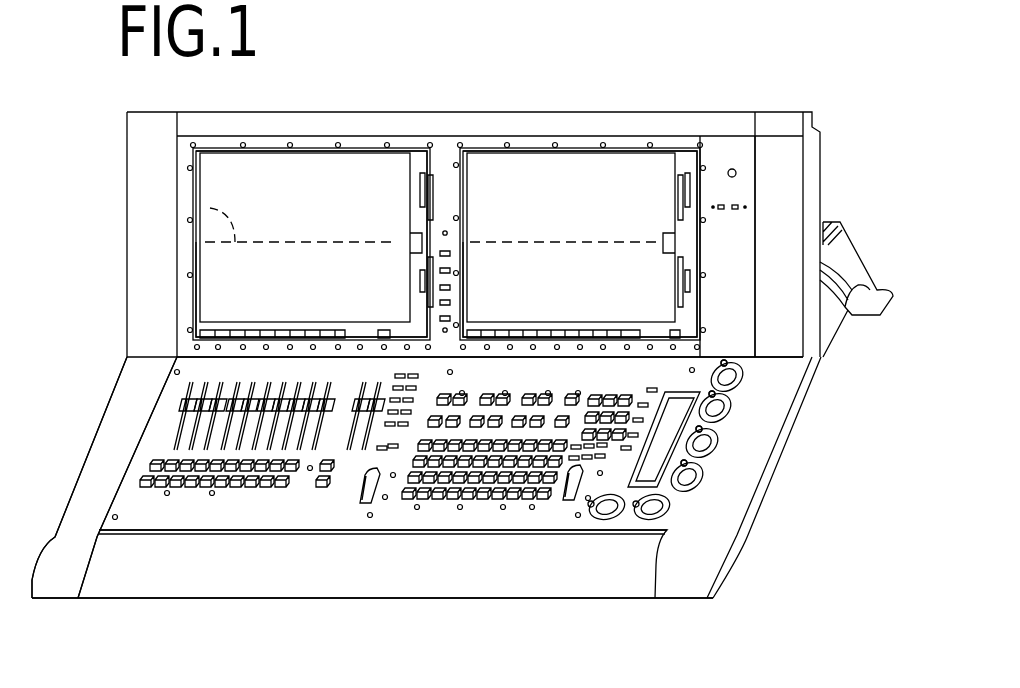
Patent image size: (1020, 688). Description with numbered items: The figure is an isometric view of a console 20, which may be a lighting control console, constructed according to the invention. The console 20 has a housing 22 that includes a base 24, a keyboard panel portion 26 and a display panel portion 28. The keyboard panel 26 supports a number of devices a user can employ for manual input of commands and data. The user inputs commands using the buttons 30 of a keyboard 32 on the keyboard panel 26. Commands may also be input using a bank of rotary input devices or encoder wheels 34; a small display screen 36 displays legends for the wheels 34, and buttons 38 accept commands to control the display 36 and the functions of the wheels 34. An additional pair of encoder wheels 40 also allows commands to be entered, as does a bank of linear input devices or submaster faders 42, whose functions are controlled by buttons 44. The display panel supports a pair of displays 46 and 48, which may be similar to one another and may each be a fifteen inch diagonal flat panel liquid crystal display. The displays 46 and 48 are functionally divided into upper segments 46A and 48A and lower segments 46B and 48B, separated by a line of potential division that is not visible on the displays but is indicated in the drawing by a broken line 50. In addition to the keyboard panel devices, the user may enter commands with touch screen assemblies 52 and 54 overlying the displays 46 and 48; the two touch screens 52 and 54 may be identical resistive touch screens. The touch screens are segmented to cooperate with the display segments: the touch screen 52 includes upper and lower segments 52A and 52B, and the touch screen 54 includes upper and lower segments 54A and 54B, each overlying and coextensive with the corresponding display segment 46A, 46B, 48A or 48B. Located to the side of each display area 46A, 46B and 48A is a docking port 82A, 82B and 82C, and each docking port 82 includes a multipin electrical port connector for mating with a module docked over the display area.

The console 20 is at (840, 101).
The housing 22 is at (150, 337).
The base 24 is at (868, 320).
The keyboard panel portion 26 is at (133, 495).
The display panel portion 28 is at (727, 153).
The buttons 30 is at (530, 496).
The keyboard 32 is at (379, 565).
The encoder wheels 34 is at (712, 440).
The display screen 36 is at (650, 473).
The buttons 38 is at (690, 463).
The encoder wheels 40 is at (340, 513).
The submaster faders 42 is at (175, 408).
The buttons 44 is at (255, 490).
The display 46 is at (287, 175).
The upper segment 46A is at (306, 198).
The lower segment 46B is at (301, 283).
The display 48 is at (600, 173).
The upper segment 48A is at (562, 198).
The lower segment 48B is at (560, 283).
The broken line 50 is at (187, 206).
The touch screen assembly 52 is at (220, 262).
The upper segment 52A is at (345, 168).
The lower segment 52B is at (227, 285).
The touch screen assembly 54 is at (643, 277).
The upper segment 54A is at (652, 170).
The lower segment 54B is at (657, 310).
The docking port 82 is at (650, 303).
The docking port 82A is at (413, 165).
The docking port 82B is at (423, 283).
The docking port 82C is at (698, 190).